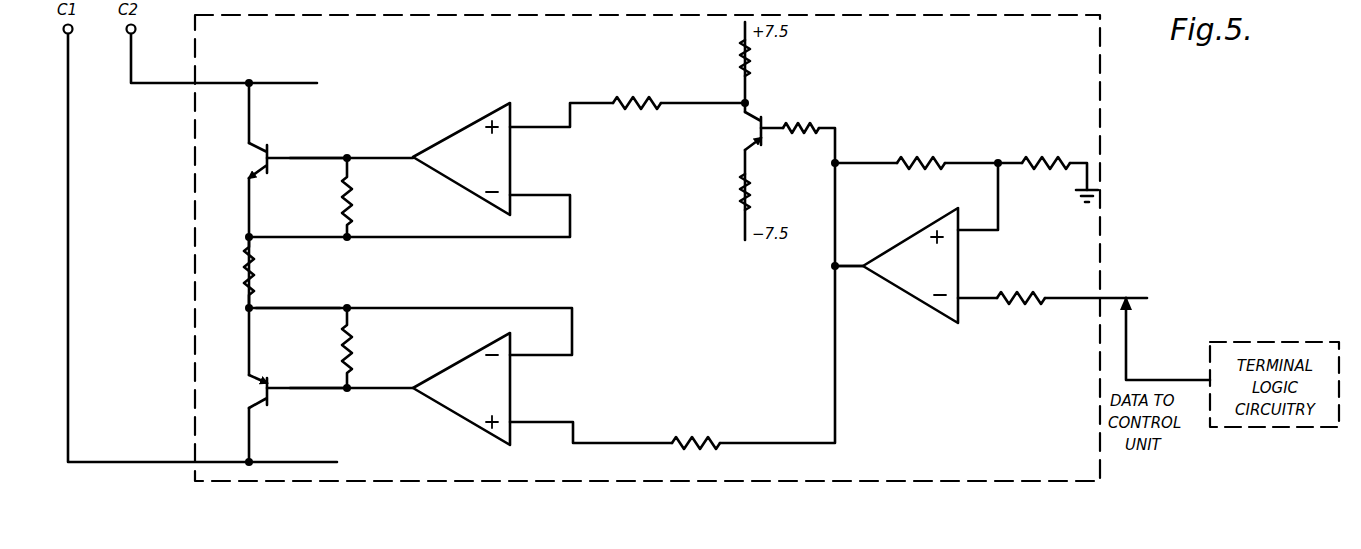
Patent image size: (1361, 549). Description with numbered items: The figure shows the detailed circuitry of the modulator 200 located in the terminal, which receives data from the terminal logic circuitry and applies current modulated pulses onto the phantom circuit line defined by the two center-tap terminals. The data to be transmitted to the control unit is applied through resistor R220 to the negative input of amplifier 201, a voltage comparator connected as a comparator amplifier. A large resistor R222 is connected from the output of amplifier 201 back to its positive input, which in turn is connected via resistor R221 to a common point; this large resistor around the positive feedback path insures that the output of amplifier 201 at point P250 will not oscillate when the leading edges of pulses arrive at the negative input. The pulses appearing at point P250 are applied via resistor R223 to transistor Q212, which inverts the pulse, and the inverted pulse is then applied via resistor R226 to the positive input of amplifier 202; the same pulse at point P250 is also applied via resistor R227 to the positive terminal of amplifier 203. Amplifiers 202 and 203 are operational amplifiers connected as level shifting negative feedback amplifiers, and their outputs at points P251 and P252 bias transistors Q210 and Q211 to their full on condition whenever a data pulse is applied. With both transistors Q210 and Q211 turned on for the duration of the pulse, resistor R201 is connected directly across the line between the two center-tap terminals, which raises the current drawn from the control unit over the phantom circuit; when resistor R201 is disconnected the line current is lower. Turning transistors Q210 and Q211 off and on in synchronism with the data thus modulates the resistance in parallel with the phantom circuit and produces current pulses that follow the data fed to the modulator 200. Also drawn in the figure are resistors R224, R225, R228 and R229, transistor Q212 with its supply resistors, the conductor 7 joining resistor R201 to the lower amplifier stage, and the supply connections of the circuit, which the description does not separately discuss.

The modulator 200 is at (1103, 128).
The amplifier 201 is at (932, 309).
The amplifier 202 is at (466, 123).
The amplifier 203 is at (447, 413).
The conductor (line) 7 is at (303, 305).
The transistor Q210 is at (235, 160).
The transistor Q211 is at (235, 391).
The transistor Q212 is at (775, 123).
The resistor R201 is at (250, 272).
The resistor R220 is at (1021, 302).
The resistor R221 is at (1046, 163).
The resistor R222 is at (921, 164).
The resistor R223 is at (798, 149).
The resistor R224 (62K) R224 is at (744, 192).
The resistor R225 (68K) R225 is at (742, 58).
The resistor R226 is at (637, 104).
The resistor R227 is at (691, 447).
The resistor R228 (10K) R228 is at (350, 197).
The resistor R229 (10K) R229 is at (343, 348).
The point P250 is at (853, 270).
The point P251 is at (311, 152).
The point P252 is at (302, 394).